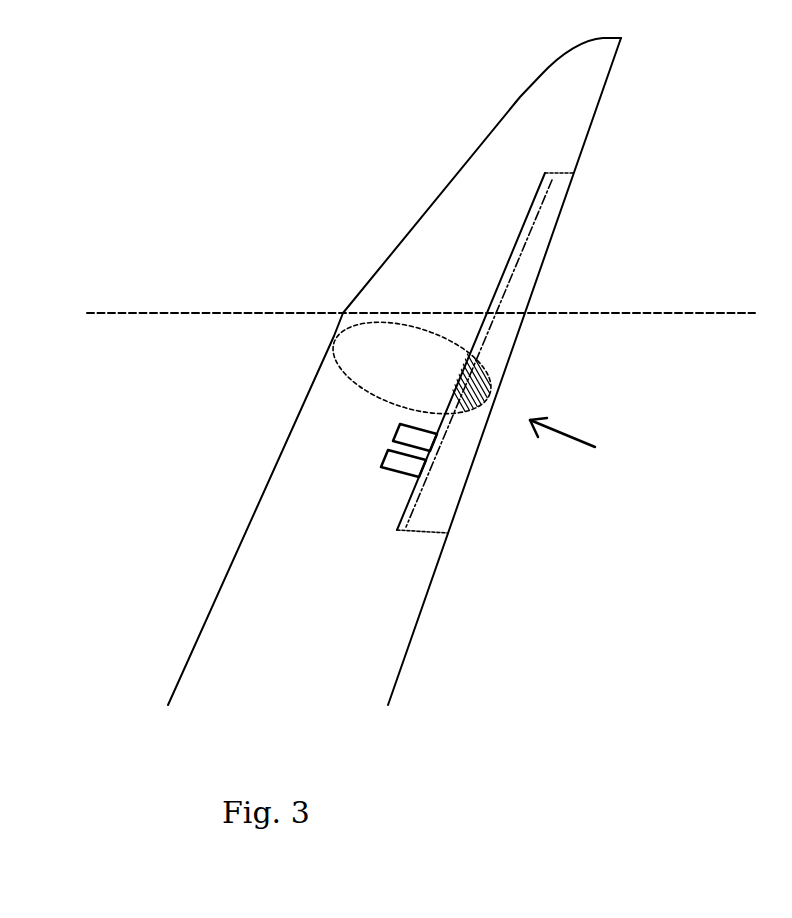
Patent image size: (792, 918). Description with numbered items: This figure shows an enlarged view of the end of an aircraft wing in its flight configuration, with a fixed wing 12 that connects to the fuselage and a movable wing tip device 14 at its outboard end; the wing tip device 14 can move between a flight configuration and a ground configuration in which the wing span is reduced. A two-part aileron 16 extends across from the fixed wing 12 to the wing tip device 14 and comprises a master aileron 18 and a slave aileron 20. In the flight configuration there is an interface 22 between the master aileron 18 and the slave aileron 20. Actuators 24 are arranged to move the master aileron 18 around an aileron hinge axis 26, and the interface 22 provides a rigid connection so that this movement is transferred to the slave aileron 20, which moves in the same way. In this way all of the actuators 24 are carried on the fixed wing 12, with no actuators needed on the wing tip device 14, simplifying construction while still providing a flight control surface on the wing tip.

The fixed wing 12 is at (248, 597).
The movable wing tip device 14 is at (477, 174).
The two-part aileron 16 is at (585, 443).
The master aileron 18 is at (440, 503).
The slave aileron 20 is at (520, 290).
The interface 22 is at (482, 397).
The actuators 24 is at (403, 465).
The aileron hinge axis 26 is at (537, 207).